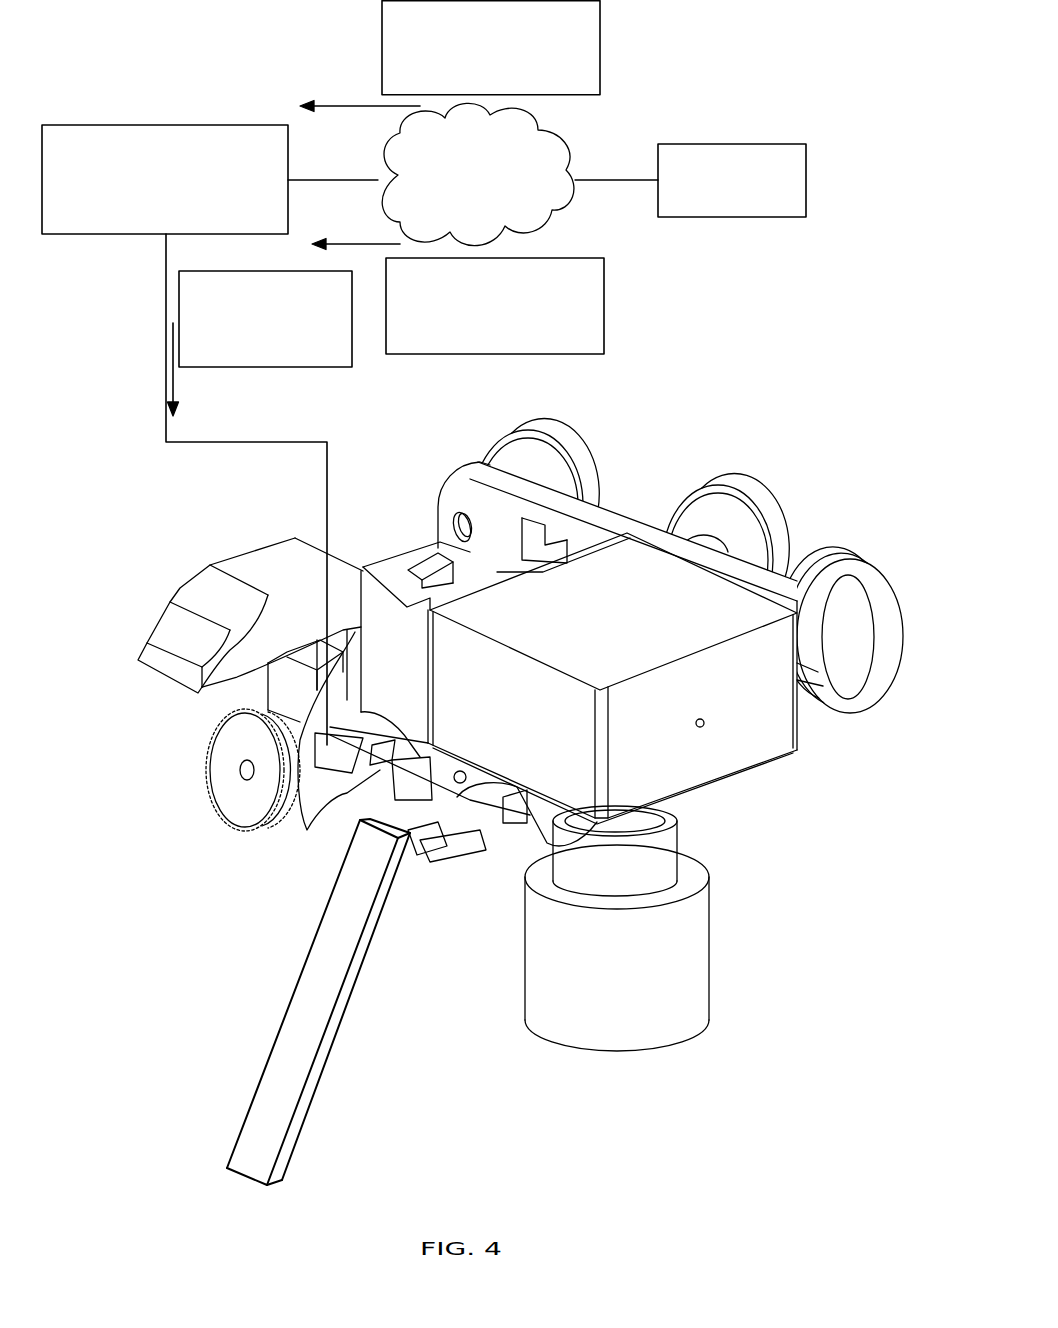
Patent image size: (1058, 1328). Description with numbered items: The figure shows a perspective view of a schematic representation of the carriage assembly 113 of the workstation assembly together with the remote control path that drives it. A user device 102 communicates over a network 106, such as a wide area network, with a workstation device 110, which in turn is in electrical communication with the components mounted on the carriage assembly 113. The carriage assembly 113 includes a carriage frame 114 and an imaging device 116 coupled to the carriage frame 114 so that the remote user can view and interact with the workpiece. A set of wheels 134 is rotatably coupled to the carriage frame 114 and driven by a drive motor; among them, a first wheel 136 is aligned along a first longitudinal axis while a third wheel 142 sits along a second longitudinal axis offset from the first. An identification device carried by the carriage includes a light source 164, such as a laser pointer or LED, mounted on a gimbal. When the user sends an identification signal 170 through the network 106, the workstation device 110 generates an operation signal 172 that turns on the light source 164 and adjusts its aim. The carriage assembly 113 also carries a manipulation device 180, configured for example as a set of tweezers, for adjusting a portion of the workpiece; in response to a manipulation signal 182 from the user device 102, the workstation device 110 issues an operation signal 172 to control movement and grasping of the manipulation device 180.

The user device 102 is at (708, 176).
The network 106 is at (492, 186).
The workstation device 110 is at (92, 159).
The carriage assembly 113 is at (680, 335).
The carriage frame 114 is at (437, 470).
The imaging device 116 is at (711, 982).
The set of wheels 134 is at (536, 420).
The first wheel 136 is at (850, 560).
The third wheel 142 is at (710, 478).
The light source 164 is at (437, 850).
The identification signal 170 is at (432, 33).
The operation signal 172 is at (230, 305).
The manipulation device 180 is at (292, 995).
The manipulation signal 182 is at (437, 291).